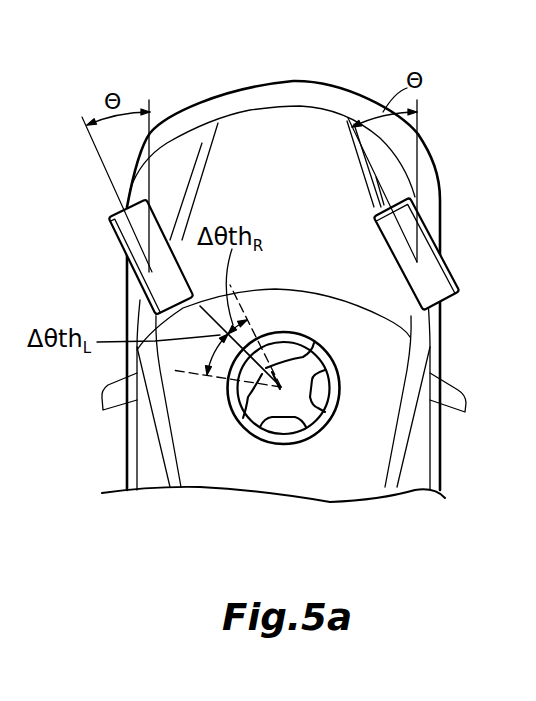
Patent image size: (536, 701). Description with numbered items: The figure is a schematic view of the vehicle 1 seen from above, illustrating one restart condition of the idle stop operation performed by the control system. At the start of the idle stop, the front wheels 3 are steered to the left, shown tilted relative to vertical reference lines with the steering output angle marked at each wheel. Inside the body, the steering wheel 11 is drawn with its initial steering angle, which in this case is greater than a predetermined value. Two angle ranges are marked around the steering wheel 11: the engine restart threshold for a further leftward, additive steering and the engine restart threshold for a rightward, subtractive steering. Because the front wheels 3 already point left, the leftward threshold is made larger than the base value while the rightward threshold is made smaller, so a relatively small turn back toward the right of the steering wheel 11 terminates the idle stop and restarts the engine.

The vehicle 1 is at (327, 75).
The front wheels 3 is at (121, 212).
The steering wheel 11 is at (288, 446).